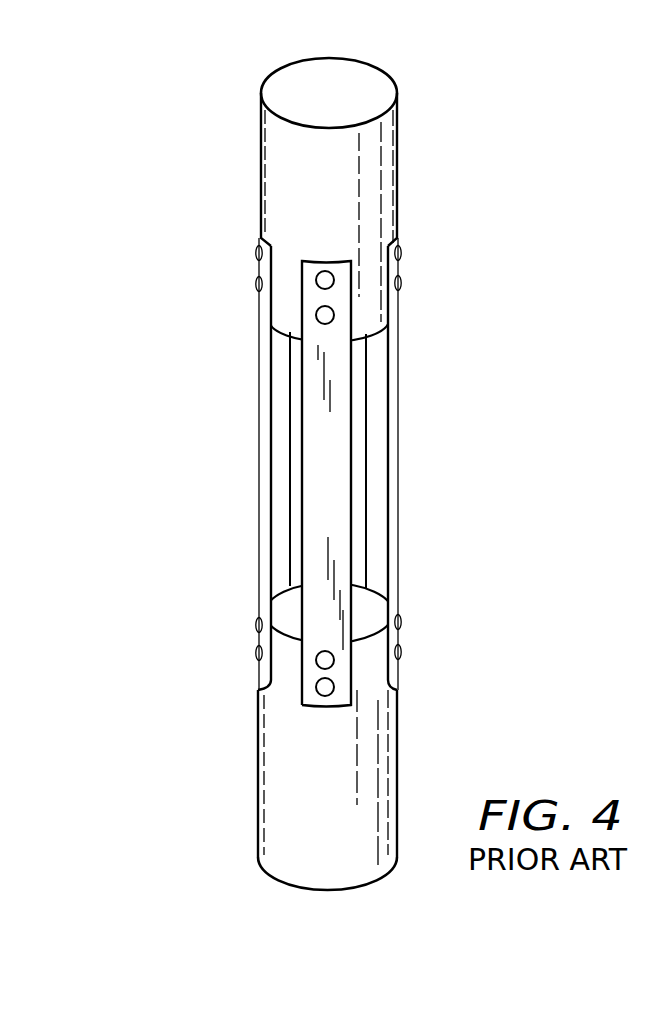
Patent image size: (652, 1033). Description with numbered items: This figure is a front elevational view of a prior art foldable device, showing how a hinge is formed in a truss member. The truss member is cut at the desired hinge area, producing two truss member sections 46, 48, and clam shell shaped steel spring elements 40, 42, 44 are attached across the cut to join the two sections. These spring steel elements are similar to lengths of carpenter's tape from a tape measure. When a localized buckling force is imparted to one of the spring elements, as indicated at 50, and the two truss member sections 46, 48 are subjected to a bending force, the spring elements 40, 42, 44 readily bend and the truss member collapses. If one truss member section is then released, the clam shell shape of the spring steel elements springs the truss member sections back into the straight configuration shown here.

The clam shell shaped steel spring element 40 is at (395, 437).
The clam shell shaped steel spring element 42 is at (259, 363).
The clam shell shaped steel spring element 44 is at (328, 453).
The truss member section 46 is at (372, 162).
The truss member section 48 is at (368, 767).
The localized buckling force 50 is at (318, 484).